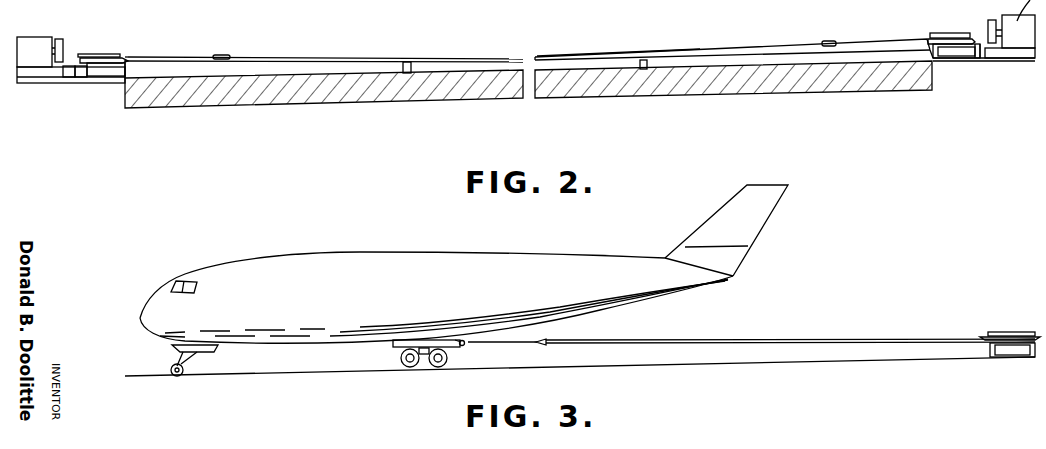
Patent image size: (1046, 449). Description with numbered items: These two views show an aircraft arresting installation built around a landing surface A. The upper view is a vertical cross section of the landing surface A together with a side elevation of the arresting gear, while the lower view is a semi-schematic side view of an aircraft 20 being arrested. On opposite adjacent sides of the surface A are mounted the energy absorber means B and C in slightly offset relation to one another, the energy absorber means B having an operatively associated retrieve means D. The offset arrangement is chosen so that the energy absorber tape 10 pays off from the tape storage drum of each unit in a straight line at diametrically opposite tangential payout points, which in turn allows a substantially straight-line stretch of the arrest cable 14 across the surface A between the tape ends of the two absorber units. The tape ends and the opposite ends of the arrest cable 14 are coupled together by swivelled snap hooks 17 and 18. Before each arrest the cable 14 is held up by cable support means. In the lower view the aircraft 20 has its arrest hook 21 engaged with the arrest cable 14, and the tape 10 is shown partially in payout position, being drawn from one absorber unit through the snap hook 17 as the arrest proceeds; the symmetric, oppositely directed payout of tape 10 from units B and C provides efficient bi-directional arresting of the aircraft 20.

In FIG. 2, the energy absorber tape 10 is at (153, 57).
In FIG. 3, the energy absorber tape 10 is at (858, 340).
In FIG. 2, the arrest cable 14 is at (588, 56).
In FIG. 3, the arrest cable 14 is at (486, 344).
In FIG. 2, the swivelled snap hook 17 is at (218, 56).
In FIG. 3, the swivelled snap hook 17 is at (541, 343).
In FIG. 2, the swivelled snap hook 18 is at (831, 42).
In FIG. 3, the aircraft 20 is at (502, 259).
In FIG. 3, the arrest hook 21 is at (464, 342).
In FIG. 2, the landing surface A is at (572, 80).
In FIG. 3, the landing surface A is at (788, 361).
In FIG. 2, the energy absorber means B is at (93, 54).
In FIG. 3, the energy absorber means B is at (989, 333).
In FIG. 2, the energy absorber means C is at (961, 35).
In FIG. 2, the retrieve means D is at (30, 50).